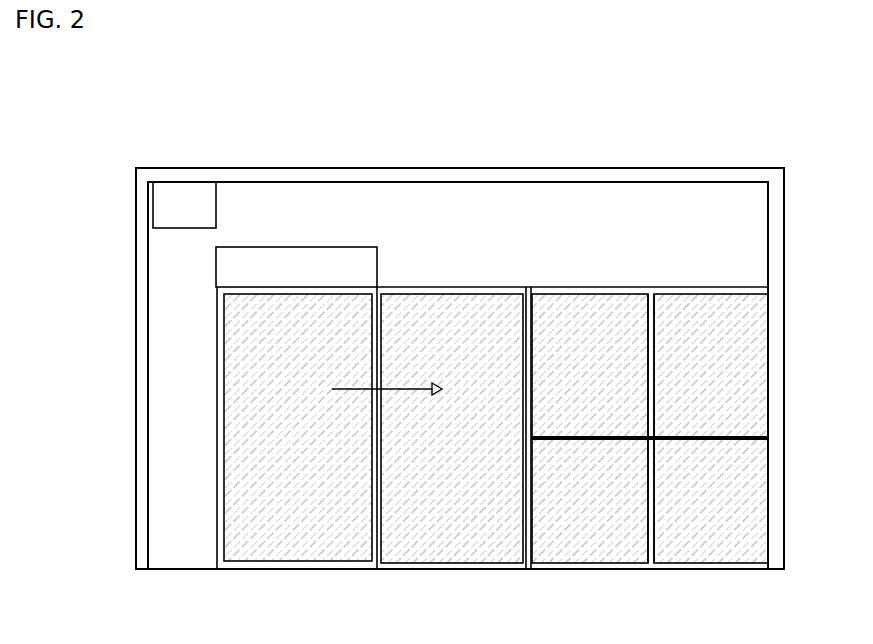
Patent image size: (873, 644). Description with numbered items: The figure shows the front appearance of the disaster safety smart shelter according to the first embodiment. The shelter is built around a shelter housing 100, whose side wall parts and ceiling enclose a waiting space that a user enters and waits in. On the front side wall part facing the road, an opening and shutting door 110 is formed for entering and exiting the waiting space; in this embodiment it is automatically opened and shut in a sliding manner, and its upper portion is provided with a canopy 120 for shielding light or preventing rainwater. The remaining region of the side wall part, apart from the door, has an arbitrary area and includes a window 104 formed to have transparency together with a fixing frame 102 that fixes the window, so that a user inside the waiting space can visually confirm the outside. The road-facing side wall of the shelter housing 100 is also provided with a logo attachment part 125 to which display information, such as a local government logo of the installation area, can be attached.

The shelter housing 100 is at (118, 368).
The fixing frame 102 is at (652, 497).
The window 104 is at (728, 399).
The opening and shutting door 110 is at (374, 507).
The canopy 120 is at (313, 265).
The logo attachment part 125 is at (182, 197).